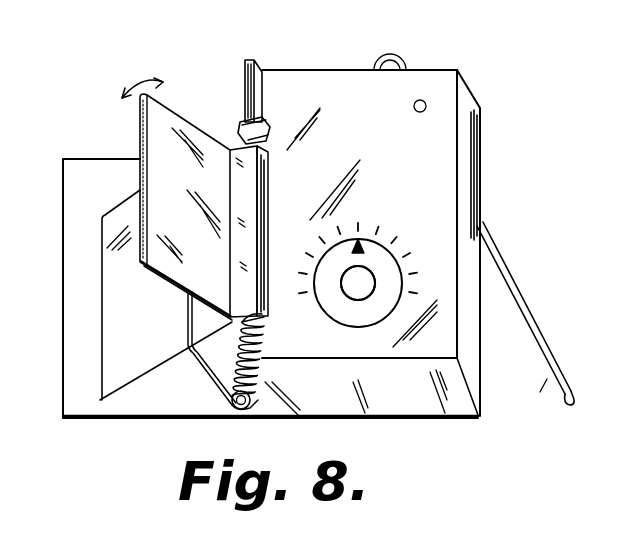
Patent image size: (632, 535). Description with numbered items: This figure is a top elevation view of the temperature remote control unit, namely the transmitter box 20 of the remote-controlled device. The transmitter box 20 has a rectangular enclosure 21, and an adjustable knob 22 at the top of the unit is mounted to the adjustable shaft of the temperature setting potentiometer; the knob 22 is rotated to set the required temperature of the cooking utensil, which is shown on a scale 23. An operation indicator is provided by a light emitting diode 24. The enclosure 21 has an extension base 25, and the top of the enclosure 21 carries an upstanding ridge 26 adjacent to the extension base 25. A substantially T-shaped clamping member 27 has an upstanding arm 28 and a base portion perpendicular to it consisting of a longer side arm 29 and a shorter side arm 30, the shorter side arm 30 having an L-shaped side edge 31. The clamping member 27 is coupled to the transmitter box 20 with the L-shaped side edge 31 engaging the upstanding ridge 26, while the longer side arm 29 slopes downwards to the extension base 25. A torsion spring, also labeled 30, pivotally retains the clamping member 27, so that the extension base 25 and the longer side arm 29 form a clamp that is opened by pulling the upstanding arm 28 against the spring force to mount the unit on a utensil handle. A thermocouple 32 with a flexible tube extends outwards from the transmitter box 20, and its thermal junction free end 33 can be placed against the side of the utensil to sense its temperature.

The transmitter box 20 is at (459, 68).
The rectangular enclosure 21 is at (465, 170).
The adjustable knob 22 is at (378, 257).
The scale 23 is at (440, 233).
The light emitting diode 24 is at (418, 112).
The extension base 25 is at (72, 378).
The upstanding ridge 26 is at (247, 60).
The clamping member 27 is at (138, 145).
The upstanding arm 28 is at (200, 135).
The longer side arm 29 is at (112, 217).
The shorter side arm 30 is at (247, 197).
The L-shaped side edge 31 is at (270, 296).
The thermocouple 32 is at (262, 412).
The thermal junction free end 33 is at (574, 403).